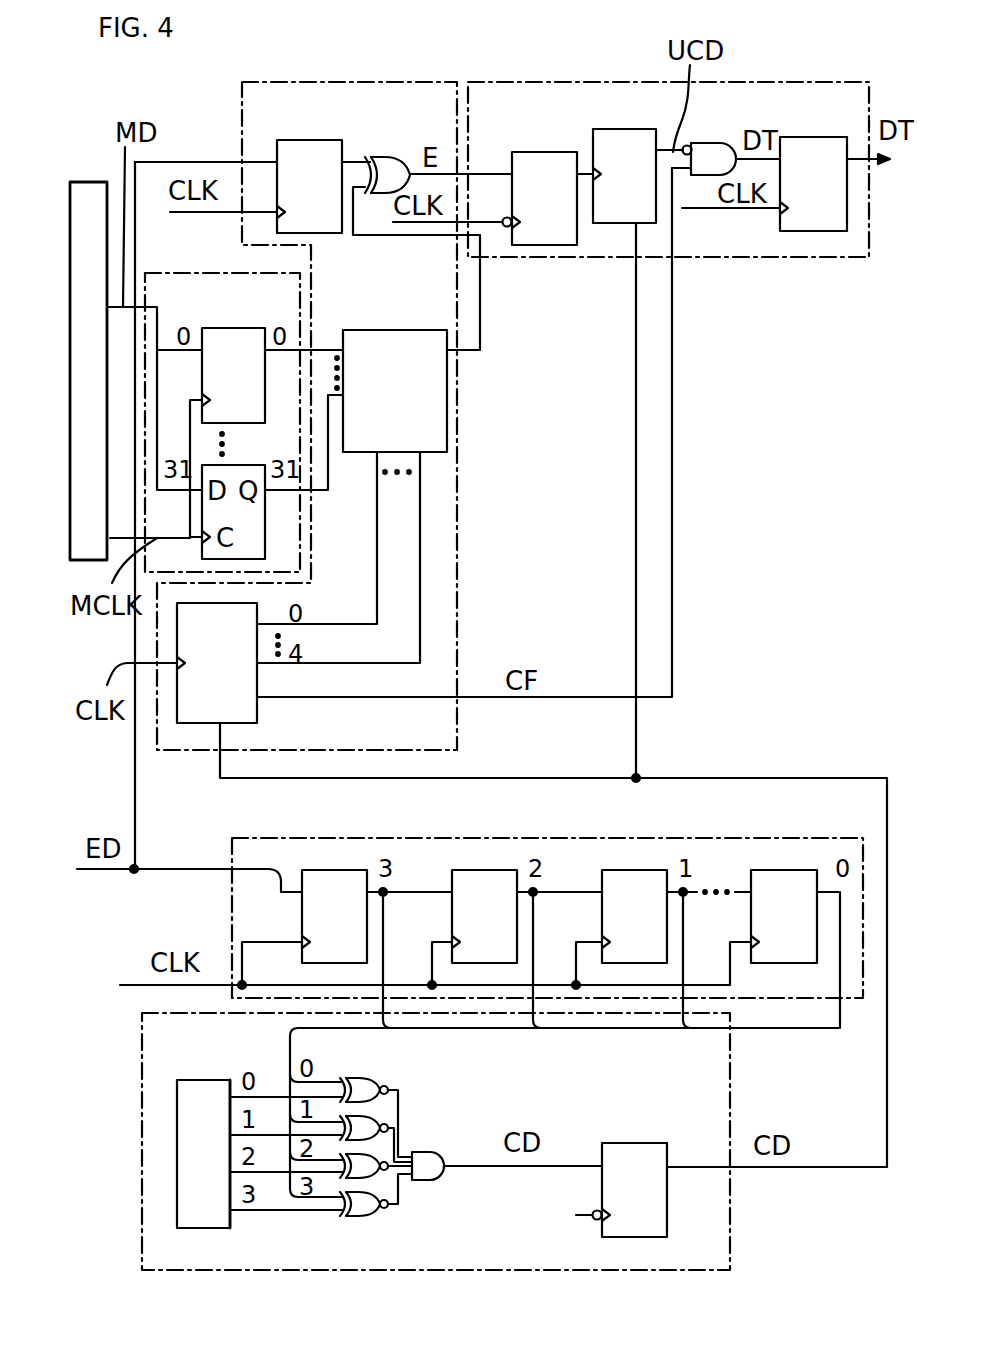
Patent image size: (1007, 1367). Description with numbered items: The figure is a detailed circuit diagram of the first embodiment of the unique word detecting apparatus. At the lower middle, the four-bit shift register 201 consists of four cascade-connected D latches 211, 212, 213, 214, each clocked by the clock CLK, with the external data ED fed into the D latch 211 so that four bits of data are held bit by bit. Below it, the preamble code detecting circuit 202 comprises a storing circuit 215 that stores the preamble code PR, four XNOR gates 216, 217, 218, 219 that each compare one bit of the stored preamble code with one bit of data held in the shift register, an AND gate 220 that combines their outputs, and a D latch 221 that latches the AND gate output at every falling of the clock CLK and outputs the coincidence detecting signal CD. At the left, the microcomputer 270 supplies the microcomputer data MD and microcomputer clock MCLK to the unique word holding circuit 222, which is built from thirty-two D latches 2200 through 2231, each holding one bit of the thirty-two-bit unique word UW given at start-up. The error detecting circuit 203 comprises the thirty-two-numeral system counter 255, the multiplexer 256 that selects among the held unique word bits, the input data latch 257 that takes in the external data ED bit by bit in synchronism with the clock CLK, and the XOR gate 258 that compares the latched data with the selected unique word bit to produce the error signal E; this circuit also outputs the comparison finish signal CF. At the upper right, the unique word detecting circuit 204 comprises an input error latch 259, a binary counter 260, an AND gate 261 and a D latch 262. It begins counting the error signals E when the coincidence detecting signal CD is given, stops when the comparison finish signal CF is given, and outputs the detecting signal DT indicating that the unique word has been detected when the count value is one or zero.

The microcomputer 270 is at (88, 180).
The input data latch 257 is at (308, 140).
The XOR gate 258 is at (380, 157).
The input error latch 259 is at (545, 152).
The binary counter 260 is at (607, 129).
The AND gate 261 is at (715, 143).
The D latch 262 is at (813, 137).
The unique word detecting circuit 204 is at (742, 258).
The unique word holding circuit 222 is at (233, 272).
The D latch 2200 is at (232, 327).
The multiplexer 256 is at (395, 330).
The D latch 2231 is at (267, 520).
The error detecting circuit 203 is at (457, 568).
The 32-numeral system counter 255 is at (257, 708).
The 4-bit shift register 201 is at (610, 820).
The D latch 211 is at (302, 895).
The D latch 212 is at (452, 895).
The D latch 213 is at (602, 895).
The D latch 214 is at (751, 895).
The preamble code detecting circuit 202 is at (322, 1270).
The storing circuit 215 is at (230, 1222).
The XNOR gate 216 is at (367, 1080).
The XNOR gate 217 is at (385, 1115).
The XNOR gate 218 is at (388, 1153).
The XNOR gate 219 is at (355, 1222).
The AND gate 220 is at (427, 1180).
The D latch 221 is at (637, 1143).